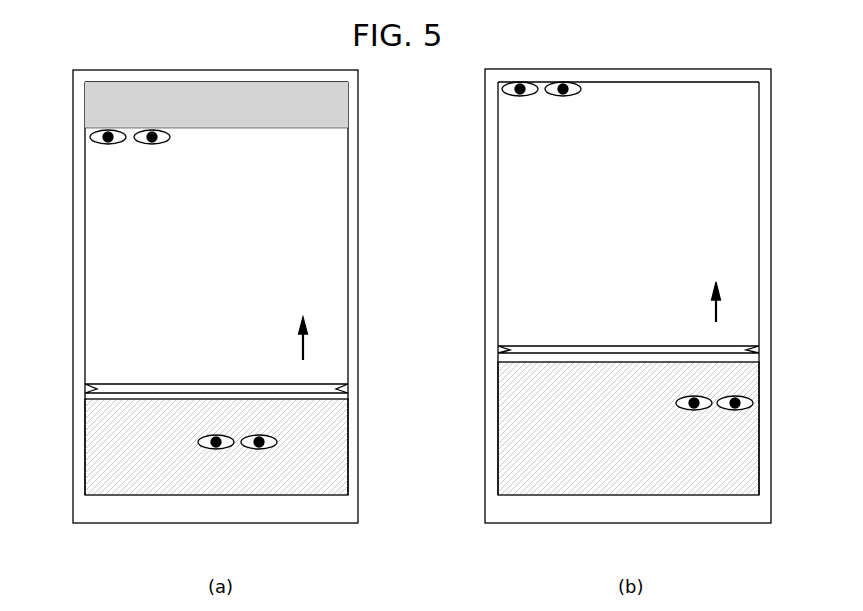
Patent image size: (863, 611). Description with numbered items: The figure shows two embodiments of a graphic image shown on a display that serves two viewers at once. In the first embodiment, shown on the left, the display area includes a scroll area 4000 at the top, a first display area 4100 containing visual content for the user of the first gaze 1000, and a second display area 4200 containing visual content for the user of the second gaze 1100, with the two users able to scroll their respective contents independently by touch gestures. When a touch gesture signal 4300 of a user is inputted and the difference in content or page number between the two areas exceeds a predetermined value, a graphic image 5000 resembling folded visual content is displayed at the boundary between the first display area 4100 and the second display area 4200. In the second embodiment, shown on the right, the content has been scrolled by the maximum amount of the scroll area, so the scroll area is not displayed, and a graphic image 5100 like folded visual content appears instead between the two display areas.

The user of the first gaze 1000 is at (104, 142).
The user of the second gaze 1100 is at (258, 450).
The scroll area 4000 is at (80, 82).
The first display area 4100 is at (80, 128).
The second display area 4200 is at (80, 400).
The touch gesture signal 4300 is at (305, 341).
The graphic image 5000 is at (331, 385).
The graphic image 5100 is at (742, 347).